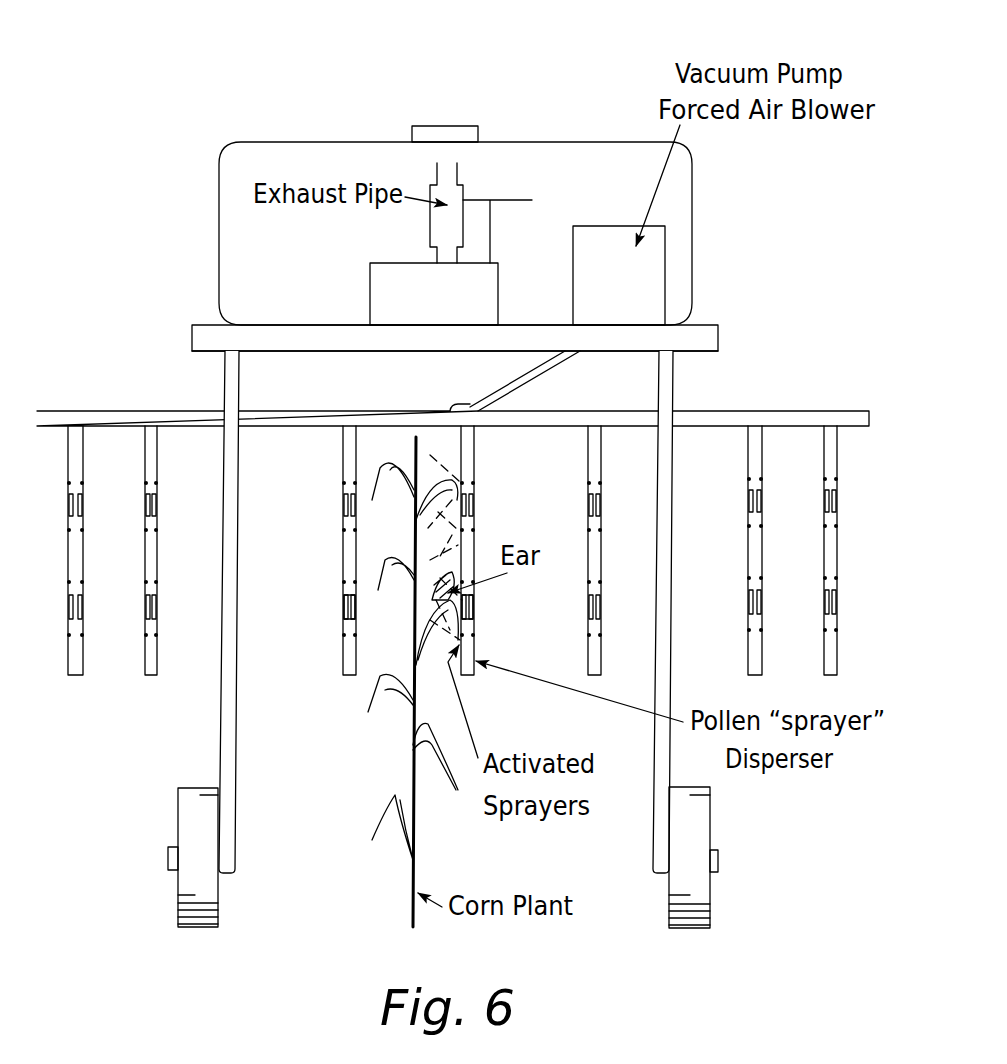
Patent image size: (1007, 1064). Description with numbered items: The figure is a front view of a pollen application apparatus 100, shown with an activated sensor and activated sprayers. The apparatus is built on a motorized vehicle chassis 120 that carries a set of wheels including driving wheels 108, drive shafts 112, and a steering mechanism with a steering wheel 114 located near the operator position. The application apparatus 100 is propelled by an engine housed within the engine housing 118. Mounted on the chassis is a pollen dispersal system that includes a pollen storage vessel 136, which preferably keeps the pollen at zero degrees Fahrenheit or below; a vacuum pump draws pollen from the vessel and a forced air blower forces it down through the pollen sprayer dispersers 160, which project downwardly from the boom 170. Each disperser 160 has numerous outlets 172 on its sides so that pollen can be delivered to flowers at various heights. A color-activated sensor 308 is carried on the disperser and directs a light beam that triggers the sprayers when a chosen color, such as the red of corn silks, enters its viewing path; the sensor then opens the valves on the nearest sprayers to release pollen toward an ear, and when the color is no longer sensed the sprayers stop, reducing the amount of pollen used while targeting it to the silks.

The pollen application apparatus 100 is at (160, 346).
The driving wheels 108 is at (219, 903).
The drive shafts 112 is at (242, 648).
The steering wheel 114 is at (512, 196).
The engine housing 118 is at (392, 293).
The vehicle chassis 120 is at (729, 321).
The pollen storage vessel 136 is at (237, 162).
The pollen sprayer dispersers 160 is at (84, 556).
The boom 170 is at (733, 420).
The outlets 172 is at (456, 623).
The sensor 308 is at (343, 609).